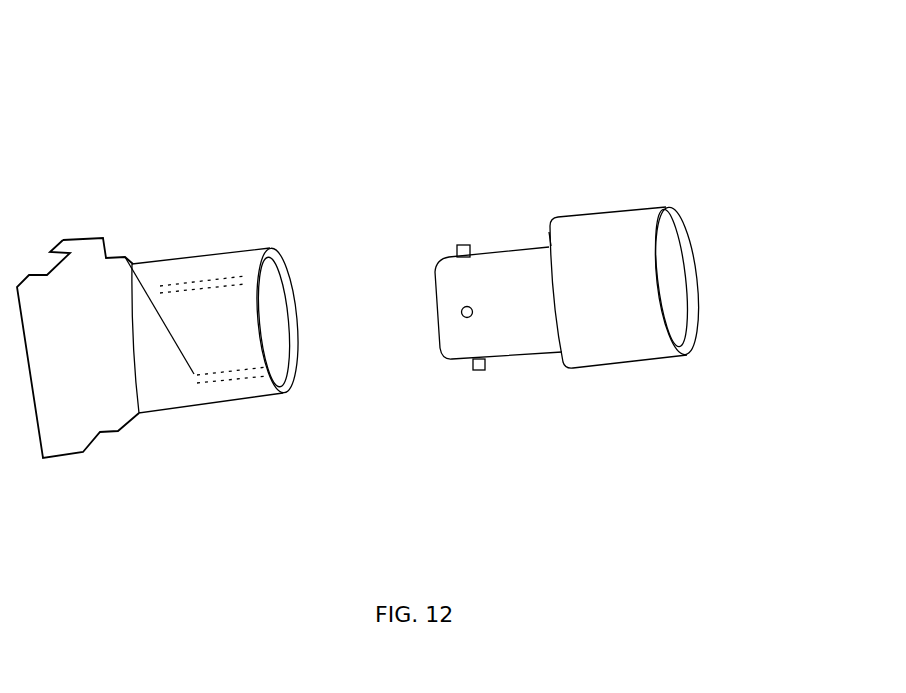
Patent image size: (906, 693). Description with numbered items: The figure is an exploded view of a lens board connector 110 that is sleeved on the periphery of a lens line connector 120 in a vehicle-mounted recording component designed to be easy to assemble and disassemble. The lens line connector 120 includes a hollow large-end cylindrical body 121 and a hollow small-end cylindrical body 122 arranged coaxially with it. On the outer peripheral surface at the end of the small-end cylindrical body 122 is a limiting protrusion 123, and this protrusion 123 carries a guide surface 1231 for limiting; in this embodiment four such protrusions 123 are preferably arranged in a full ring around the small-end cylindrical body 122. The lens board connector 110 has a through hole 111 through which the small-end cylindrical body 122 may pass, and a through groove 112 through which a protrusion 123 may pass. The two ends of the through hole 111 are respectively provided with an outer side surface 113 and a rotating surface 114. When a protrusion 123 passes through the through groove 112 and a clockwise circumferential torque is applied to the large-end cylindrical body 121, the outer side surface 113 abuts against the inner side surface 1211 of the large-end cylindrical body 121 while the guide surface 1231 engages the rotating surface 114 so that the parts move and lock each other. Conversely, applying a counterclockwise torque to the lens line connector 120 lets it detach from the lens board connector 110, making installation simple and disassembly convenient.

The lens board connector 110 is at (190, 293).
The through hole 111 is at (309, 390).
The through groove 112 is at (196, 401).
The outer side surface 113 is at (237, 268).
The rotating surface 114 is at (92, 282).
The lens line connector 120 is at (609, 229).
The large-end cylindrical body 121 is at (627, 197).
The inner side surface 1211 is at (566, 180).
The small-end cylindrical body 122 is at (498, 217).
The protrusion 123 is at (448, 209).
The guide surface 1231 is at (528, 380).